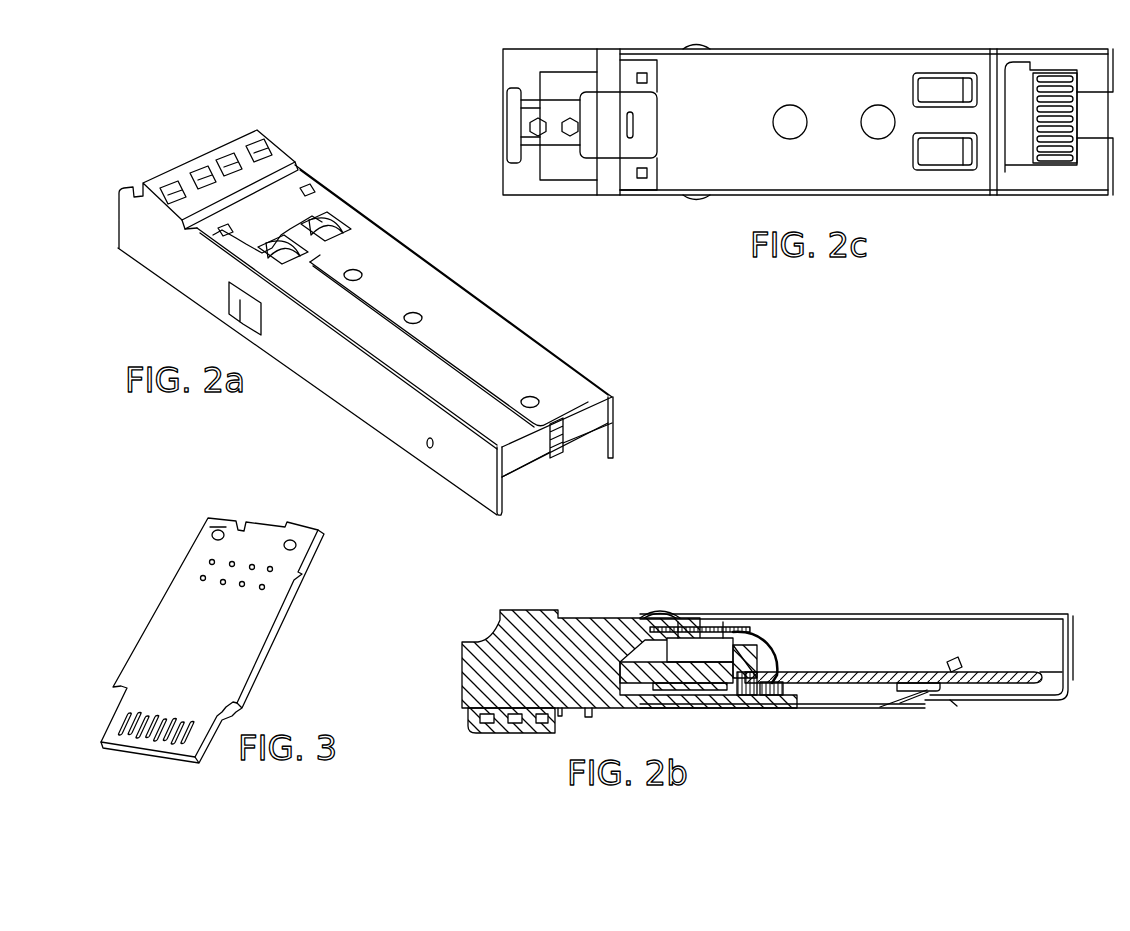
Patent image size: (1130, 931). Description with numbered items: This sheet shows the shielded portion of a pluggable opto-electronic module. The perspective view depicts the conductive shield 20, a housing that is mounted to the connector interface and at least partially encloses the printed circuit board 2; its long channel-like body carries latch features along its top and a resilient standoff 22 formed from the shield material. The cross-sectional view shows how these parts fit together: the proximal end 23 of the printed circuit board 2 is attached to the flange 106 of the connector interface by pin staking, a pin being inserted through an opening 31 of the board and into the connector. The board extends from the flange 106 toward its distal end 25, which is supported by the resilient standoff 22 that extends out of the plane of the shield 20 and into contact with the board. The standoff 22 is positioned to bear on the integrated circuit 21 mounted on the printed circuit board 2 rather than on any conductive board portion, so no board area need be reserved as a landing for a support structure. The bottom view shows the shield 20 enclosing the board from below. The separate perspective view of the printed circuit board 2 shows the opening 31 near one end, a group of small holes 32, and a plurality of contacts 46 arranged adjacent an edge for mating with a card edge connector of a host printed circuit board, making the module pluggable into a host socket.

In FIG. 2c, the printed circuit board 2 is at (1019, 160).
In FIG. 2b, the printed circuit board 2 is at (862, 670).
In FIG. 3, the printed circuit board 2 is at (150, 635).
In FIG. 2a, the conductive shield 20 is at (540, 343).
In FIG. 2b, the integrated circuit 21 is at (925, 706).
In FIG. 2b, the resilient standoff 22 is at (903, 706).
In FIG. 2b, the proximal end 23 is at (768, 660).
In FIG. 2b, the distal end 25 is at (1035, 668).
In FIG. 3, the opening 31 is at (207, 532).
In FIG. 3, the through holes 32 is at (210, 560).
In FIG. 3, the contacts 46 is at (113, 742).
In FIG. 2b, the flange 106 is at (733, 700).